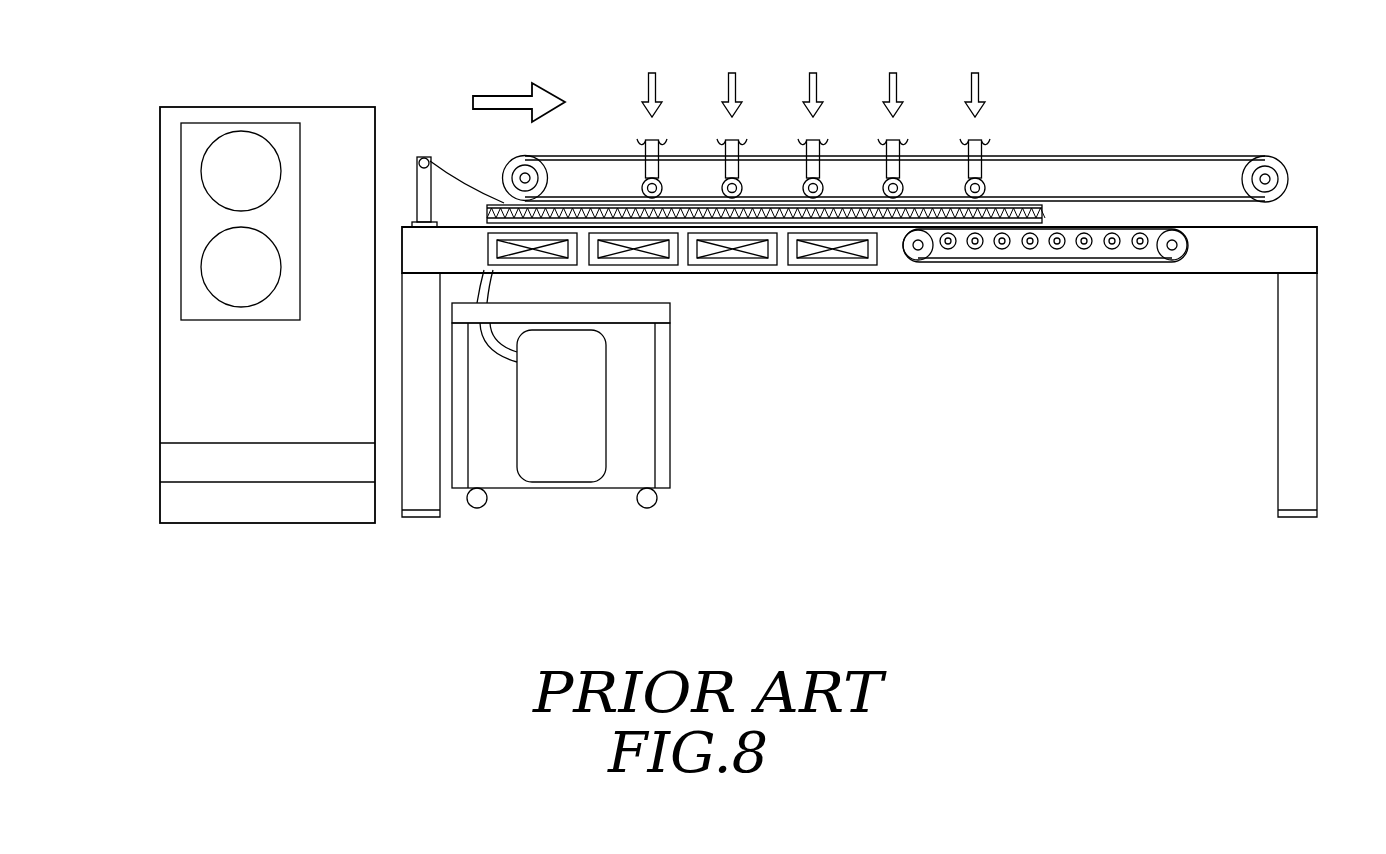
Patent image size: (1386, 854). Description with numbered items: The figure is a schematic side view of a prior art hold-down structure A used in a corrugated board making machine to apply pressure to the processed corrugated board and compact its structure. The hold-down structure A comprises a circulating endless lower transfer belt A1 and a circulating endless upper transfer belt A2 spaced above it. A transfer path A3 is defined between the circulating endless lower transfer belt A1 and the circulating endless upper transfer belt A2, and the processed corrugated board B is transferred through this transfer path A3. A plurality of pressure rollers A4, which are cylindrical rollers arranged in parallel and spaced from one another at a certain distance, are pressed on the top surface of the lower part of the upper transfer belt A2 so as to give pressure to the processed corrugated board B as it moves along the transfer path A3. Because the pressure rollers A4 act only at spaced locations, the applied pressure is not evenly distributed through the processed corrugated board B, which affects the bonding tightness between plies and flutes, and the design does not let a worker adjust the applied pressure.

The hold-down structure A is at (1053, 83).
The circulating endless lower transfer belt A1 is at (1000, 264).
The circulating endless upper transfer belt A2 is at (1188, 157).
The transfer path A3 is at (1278, 218).
The pressure rollers A4 is at (982, 152).
The processed corrugated board B is at (1010, 205).